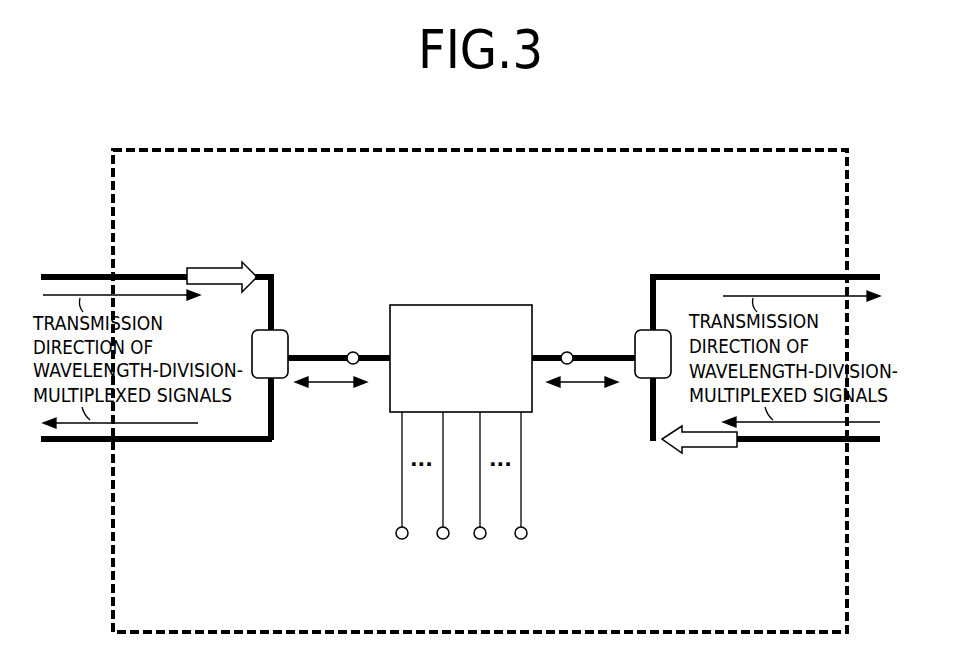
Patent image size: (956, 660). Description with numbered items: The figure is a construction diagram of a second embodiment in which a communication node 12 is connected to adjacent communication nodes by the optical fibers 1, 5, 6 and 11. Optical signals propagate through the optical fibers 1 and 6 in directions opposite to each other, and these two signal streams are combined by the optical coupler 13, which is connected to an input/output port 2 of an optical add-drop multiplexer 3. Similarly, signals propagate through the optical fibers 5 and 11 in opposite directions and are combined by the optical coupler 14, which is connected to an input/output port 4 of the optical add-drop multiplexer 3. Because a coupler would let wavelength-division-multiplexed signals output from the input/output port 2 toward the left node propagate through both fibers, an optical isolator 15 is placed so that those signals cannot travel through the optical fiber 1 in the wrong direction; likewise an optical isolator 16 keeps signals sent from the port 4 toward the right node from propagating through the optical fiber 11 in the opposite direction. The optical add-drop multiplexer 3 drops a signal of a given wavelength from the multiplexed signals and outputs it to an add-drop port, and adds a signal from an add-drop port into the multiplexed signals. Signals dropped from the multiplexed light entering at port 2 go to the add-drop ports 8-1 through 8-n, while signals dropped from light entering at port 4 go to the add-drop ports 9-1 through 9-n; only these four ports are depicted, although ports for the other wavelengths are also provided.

The optical fiber 1 is at (152, 272).
The input/output port 2 is at (353, 351).
The optical add-drop multiplexer 3 is at (462, 304).
The input/output port 4 is at (567, 351).
The optical fiber 5 is at (755, 273).
The optical fiber 6 is at (193, 443).
The add-drop port 8-1 is at (398, 539).
The add-drop port 8-n is at (441, 539).
The add-drop port 9-1 is at (480, 539).
The add-drop port 9-n is at (521, 539).
The optical fiber 11 is at (793, 443).
The communication node 12 is at (710, 149).
The optical coupler 13 is at (281, 380).
The optical coupler 14 is at (642, 380).
The optical isolator 15 is at (213, 266).
The optical isolator 16 is at (707, 453).